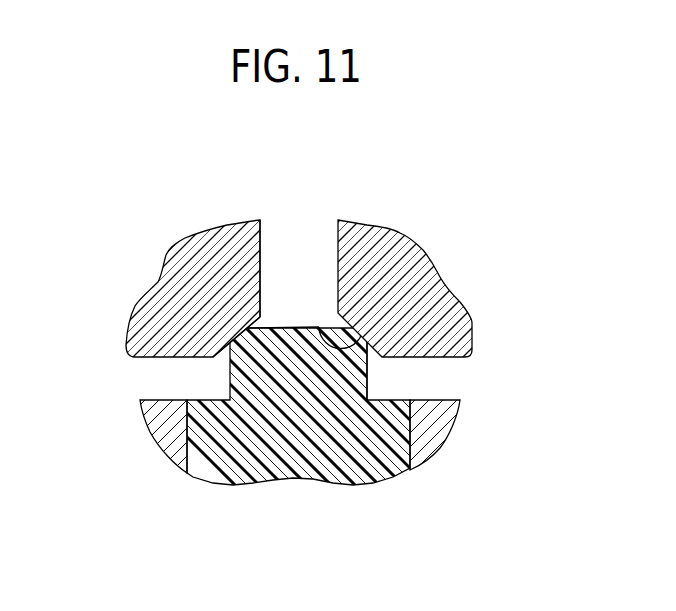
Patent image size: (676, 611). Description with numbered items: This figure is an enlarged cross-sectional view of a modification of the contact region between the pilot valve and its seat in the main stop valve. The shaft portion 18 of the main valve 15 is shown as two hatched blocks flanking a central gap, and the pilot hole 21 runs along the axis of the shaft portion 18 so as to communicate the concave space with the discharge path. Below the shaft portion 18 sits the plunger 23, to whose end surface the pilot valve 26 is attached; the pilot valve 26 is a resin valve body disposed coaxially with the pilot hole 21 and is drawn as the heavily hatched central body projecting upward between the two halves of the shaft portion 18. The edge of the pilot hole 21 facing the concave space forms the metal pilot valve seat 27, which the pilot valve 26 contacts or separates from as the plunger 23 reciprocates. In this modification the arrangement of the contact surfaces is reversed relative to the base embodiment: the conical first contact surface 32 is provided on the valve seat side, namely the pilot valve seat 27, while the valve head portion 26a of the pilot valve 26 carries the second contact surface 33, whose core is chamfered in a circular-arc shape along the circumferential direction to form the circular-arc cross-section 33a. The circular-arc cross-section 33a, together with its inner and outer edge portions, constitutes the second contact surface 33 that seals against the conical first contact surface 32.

The main valve 15 is at (202, 275).
The shaft portion 18 is at (165, 298).
The pilot hole 21 is at (260, 250).
The plunger 23 is at (427, 423).
The pilot valve 26 is at (340, 442).
The valve head portion 26a is at (343, 382).
The pilot valve seat 27 is at (233, 313).
The first contact surface 32 is at (367, 343).
The second contact surface 33 is at (257, 320).
The circular-arc cross-section 33a is at (317, 328).